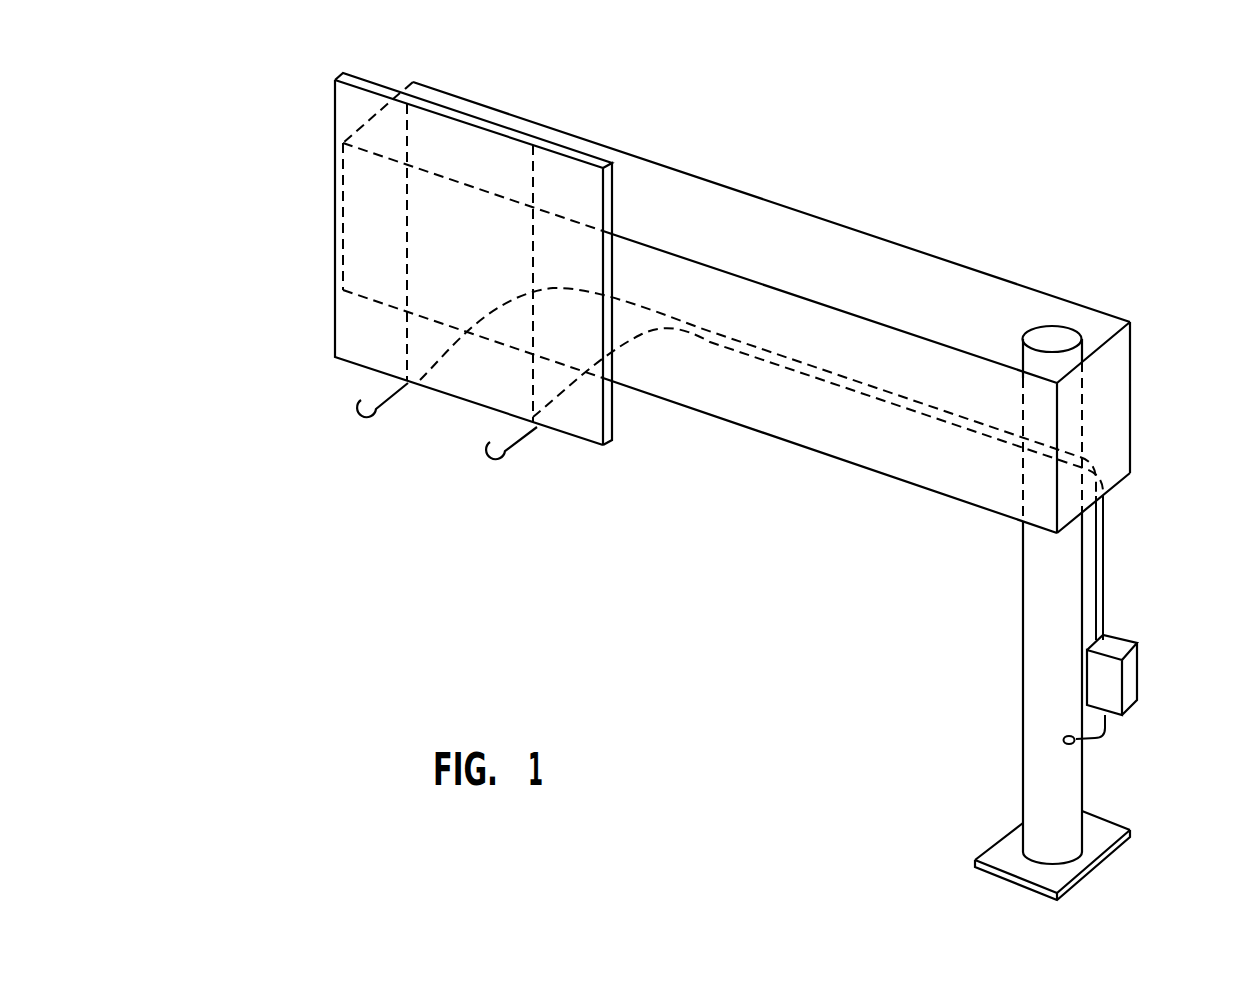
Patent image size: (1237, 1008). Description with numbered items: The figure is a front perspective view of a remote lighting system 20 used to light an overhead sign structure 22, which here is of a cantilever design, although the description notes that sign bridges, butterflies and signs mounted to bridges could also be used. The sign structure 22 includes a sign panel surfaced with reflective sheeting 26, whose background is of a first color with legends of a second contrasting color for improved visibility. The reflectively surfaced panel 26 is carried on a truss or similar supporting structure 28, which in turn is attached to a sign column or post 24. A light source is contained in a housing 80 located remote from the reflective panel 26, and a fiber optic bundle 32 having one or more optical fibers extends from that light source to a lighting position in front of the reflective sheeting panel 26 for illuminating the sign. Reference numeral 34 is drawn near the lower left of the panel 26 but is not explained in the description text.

The remote lighting system 20 is at (719, 486).
The overhead sign structure 22 is at (810, 195).
The sign column or post 24 is at (1060, 576).
The sign panel surfaced with reflective sheeting 26 is at (355, 112).
The truss or similar supporting structure 28 is at (1023, 310).
The fiber optic bundle 32 is at (1104, 541).
The panel lower edge 34 is at (335, 333).
The housing 80 is at (1122, 641).